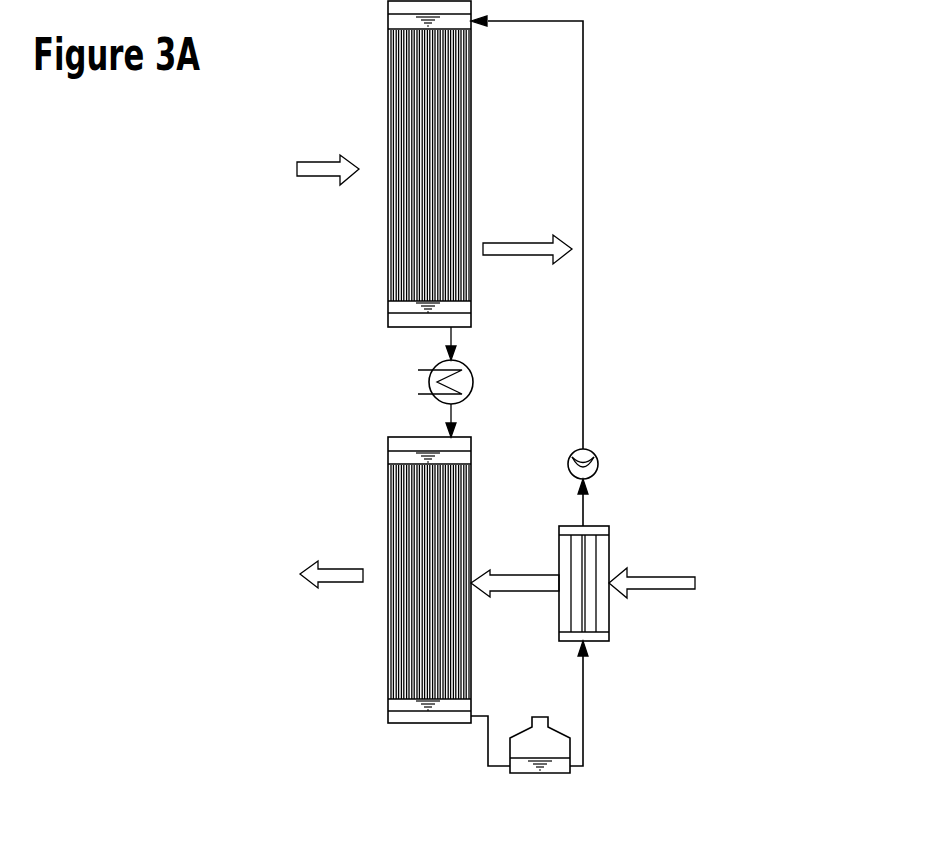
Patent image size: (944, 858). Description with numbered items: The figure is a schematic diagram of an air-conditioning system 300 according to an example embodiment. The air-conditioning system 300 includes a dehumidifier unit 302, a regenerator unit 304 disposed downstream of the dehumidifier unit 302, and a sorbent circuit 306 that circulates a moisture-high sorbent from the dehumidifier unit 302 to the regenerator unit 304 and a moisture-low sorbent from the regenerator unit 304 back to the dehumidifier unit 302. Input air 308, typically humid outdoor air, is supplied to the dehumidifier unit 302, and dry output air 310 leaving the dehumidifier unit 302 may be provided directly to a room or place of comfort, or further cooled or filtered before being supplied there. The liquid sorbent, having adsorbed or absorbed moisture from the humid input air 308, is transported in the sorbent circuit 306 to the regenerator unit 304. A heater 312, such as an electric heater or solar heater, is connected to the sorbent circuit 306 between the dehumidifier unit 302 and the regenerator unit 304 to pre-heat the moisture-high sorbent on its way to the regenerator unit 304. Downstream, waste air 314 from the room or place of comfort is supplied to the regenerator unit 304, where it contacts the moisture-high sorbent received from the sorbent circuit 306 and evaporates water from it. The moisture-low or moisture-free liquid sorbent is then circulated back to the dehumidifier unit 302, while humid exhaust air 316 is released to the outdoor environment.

The air-conditioning system 300 is at (646, 192).
The dehumidifier unit 302 is at (455, 78).
The regenerator unit 304 is at (403, 658).
The sorbent circuit 306 is at (585, 359).
The input air 308 is at (318, 168).
The dry output air 310 is at (518, 252).
The heater 312 is at (430, 382).
The waste air 314 is at (664, 582).
The humid exhaust air 316 is at (344, 573).